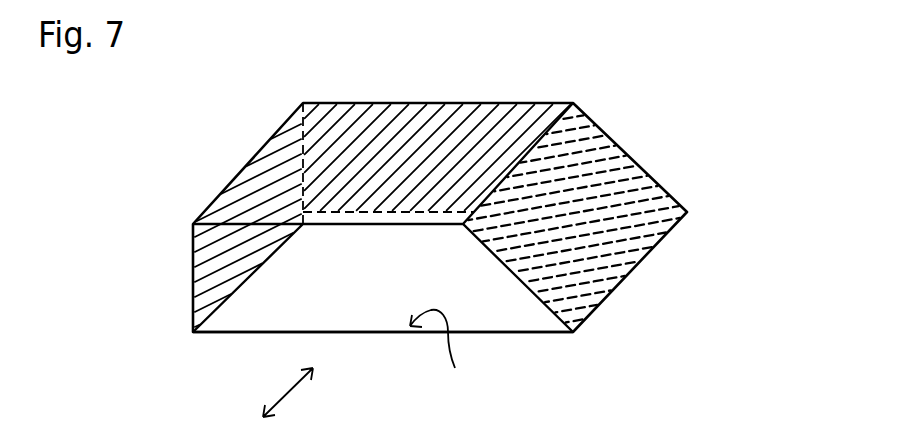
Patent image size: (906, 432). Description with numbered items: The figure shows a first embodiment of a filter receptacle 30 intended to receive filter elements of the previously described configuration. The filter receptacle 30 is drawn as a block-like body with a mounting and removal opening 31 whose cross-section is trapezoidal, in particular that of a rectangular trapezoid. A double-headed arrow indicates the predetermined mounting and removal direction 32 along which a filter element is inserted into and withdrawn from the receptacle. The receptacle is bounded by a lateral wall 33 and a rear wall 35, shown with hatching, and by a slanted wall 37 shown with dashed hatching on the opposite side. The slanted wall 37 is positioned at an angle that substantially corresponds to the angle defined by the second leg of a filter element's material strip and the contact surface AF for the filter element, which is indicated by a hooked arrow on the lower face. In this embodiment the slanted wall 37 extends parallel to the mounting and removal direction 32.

The filter receptacle 30 is at (457, 225).
The mounting and removal opening 31 is at (533, 334).
The mounting and removal direction 32 is at (285, 392).
The lateral wall 33 is at (233, 180).
The rear wall 35 is at (468, 101).
The slanted wall 37 is at (631, 152).
The contact surface AF is at (452, 352).